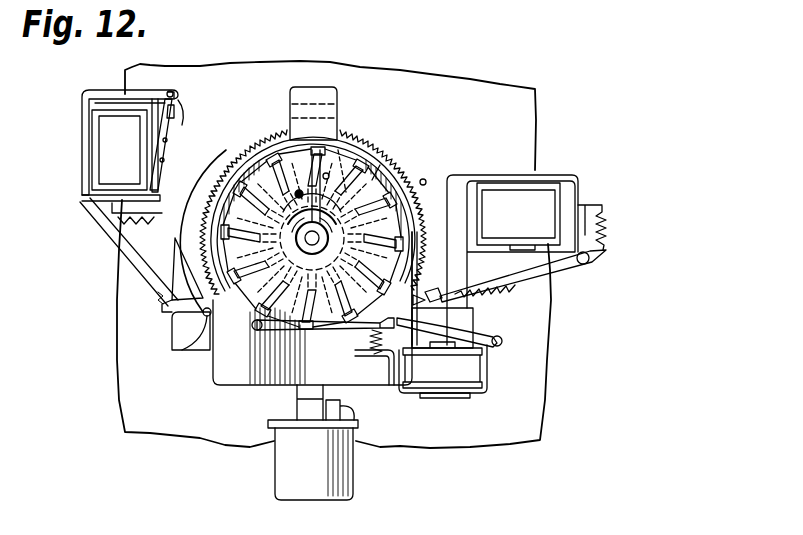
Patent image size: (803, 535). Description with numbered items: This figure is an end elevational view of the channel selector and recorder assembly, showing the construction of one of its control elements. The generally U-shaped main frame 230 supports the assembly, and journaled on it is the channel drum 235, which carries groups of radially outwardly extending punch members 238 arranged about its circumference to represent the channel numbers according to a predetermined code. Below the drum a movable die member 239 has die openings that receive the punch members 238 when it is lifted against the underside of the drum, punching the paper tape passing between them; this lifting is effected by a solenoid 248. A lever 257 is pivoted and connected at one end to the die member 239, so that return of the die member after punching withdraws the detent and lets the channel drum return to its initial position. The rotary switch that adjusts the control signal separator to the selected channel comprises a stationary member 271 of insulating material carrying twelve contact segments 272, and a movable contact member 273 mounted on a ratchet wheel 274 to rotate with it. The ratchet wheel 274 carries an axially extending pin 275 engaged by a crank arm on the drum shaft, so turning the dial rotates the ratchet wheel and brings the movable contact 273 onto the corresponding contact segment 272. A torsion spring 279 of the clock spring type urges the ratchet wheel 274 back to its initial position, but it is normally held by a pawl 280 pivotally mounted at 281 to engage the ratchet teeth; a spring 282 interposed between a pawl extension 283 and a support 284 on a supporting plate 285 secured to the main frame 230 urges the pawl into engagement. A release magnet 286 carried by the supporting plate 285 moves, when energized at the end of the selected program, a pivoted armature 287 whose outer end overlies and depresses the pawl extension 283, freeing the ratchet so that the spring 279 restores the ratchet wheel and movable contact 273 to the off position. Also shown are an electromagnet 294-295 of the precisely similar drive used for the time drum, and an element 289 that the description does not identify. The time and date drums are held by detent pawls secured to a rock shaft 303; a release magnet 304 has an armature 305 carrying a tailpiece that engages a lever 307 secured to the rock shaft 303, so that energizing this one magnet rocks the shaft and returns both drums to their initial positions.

The main frame 230 is at (336, 95).
The drum 235 is at (247, 153).
The punch members 238 is at (215, 186).
The die member 239 is at (292, 392).
The solenoid 248 is at (285, 465).
The lever 257 is at (348, 413).
The stationary member 271 is at (376, 152).
The contact segments 272 is at (340, 148).
The movable contact member 273 is at (423, 180).
The ratchet wheel 274 is at (382, 166).
The pin 275 is at (312, 150).
The torsion spring 279 is at (270, 146).
The pawl 280 is at (296, 336).
The pawl pivot 281 is at (256, 329).
The spring 282 is at (368, 344).
The pawl extension 283 is at (346, 327).
The support 284 is at (384, 360).
The supporting plate 285 is at (222, 385).
The release magnet 286 is at (446, 378).
The armature 287 is at (472, 336).
The block 289 is at (426, 319).
The electromagnet 294-295 is at (556, 203).
The rock shaft 303 is at (180, 350).
The release magnet 304 is at (100, 152).
The armature 305 is at (170, 126).
The lever 307 is at (172, 262).